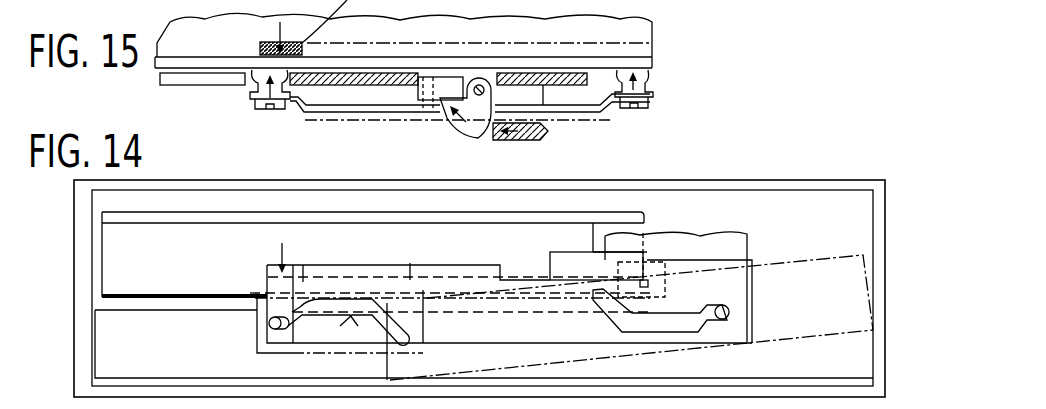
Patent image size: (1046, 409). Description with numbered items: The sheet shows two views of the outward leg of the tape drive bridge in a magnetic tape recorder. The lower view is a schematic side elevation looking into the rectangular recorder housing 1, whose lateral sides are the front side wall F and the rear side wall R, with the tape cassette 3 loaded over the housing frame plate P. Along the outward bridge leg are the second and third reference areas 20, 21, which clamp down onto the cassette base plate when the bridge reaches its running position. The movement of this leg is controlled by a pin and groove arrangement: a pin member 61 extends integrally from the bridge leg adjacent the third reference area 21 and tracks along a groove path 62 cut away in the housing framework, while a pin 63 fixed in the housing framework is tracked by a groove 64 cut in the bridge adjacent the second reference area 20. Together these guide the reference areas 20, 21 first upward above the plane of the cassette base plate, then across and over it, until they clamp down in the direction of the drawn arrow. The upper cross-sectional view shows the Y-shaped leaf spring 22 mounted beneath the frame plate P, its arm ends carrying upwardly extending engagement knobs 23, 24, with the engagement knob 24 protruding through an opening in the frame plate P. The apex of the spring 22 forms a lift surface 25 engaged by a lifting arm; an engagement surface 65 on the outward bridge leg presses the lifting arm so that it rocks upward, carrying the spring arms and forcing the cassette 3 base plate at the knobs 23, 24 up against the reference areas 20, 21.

In FIG. 14, the recorder housing 1 is at (788, 174).
In FIG. 15, the tape cassette 3 is at (584, 52).
In FIG. 14, the tape cassette 3 is at (468, 240).
In FIG. 15, the second reference area 20 is at (497, 96).
In FIG. 14, the second reference area 20 is at (650, 263).
In FIG. 14, the third reference area 21 is at (262, 268).
In FIG. 15, the leaf spring 22 is at (372, 112).
In FIG. 15, the engagement knob 23 is at (650, 77).
In FIG. 15, the engagement knob 24 is at (253, 90).
In FIG. 15, the lift surface 25 is at (453, 82).
In FIG. 14, the pin member 61 is at (268, 325).
In FIG. 14, the groove path 62 is at (352, 316).
In FIG. 14, the pin 63 is at (730, 311).
In FIG. 14, the groove 64 is at (672, 323).
In FIG. 15, the engagement surface 65 is at (532, 137).
In FIG. 14, the front side wall F is at (892, 188).
In FIG. 15, the frame plate P is at (182, 82).
In FIG. 14, the rear side wall R is at (66, 273).